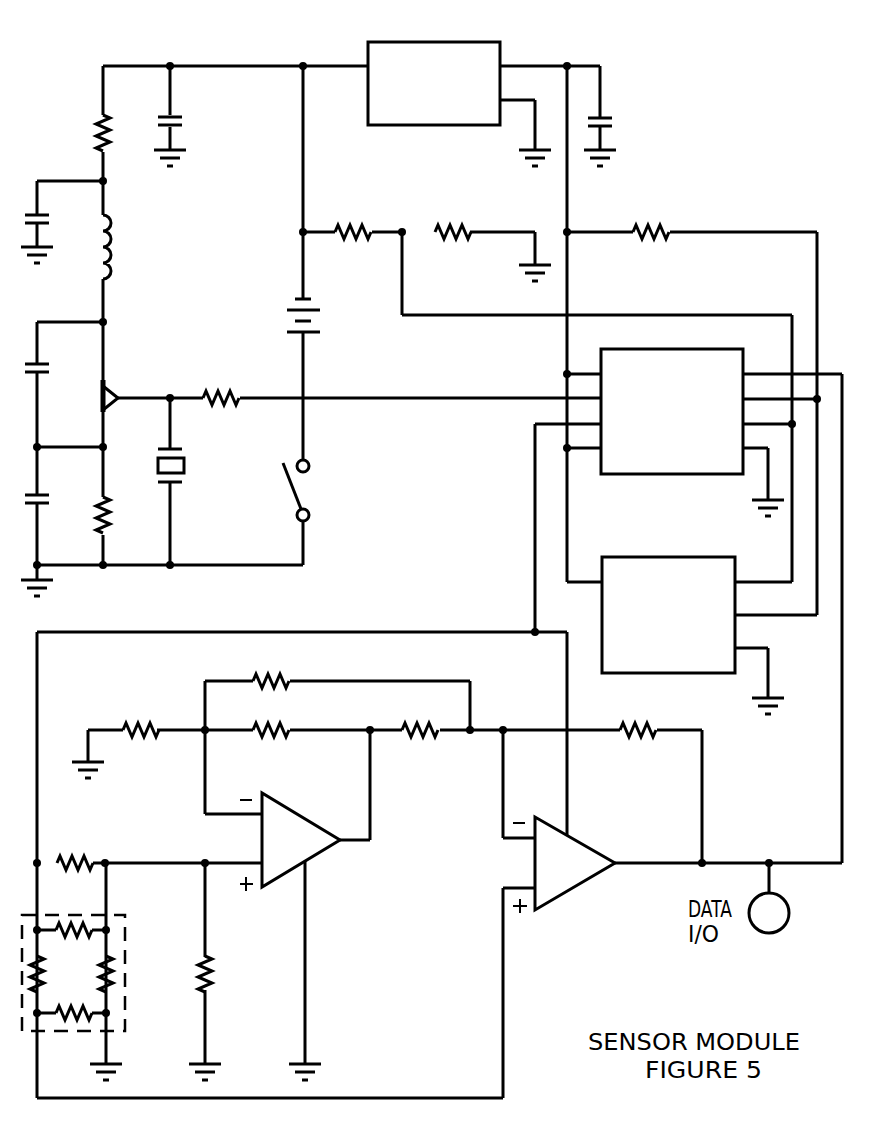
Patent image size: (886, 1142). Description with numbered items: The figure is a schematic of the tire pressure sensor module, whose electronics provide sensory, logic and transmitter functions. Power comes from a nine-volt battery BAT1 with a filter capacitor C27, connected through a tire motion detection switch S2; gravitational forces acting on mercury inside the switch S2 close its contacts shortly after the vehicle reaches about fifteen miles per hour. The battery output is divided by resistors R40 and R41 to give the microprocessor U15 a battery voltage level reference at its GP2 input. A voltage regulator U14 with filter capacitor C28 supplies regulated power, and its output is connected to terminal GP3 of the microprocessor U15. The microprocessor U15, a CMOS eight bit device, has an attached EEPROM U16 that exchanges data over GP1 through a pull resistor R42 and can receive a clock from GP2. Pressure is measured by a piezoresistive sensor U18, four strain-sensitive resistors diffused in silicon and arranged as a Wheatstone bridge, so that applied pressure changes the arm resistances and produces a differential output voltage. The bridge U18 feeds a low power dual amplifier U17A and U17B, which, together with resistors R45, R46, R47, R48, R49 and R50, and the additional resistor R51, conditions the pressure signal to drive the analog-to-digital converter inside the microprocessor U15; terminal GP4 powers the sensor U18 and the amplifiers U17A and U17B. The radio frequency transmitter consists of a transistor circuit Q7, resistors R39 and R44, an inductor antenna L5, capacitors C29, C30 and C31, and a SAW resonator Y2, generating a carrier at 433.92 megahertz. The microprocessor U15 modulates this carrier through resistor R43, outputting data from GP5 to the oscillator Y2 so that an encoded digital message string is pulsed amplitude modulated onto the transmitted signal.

The resistor R39 is at (77, 127).
The filter capacitor C27 is at (190, 117).
The voltage regulator U14 is at (434, 68).
The filter capacitor C28 is at (621, 119).
The capacitor C29 is at (58, 209).
The inductor antenna L5 is at (123, 245).
The voltage divider resistor R40 is at (355, 217).
The voltage divider resistor R41 is at (454, 217).
The pull resistor R42 is at (652, 218).
The nine VDC battery BAT1 is at (278, 282).
The capacitor C30 is at (58, 358).
The transistor circuit Q7 is at (95, 400).
The resistor R43 is at (222, 383).
The microprocessor U15 is at (672, 398).
The capacitor C31 is at (58, 490).
The resistor R44 is at (128, 513).
The SAW resonator Y2 is at (189, 459).
The tire motion detection switch S2 is at (318, 487).
The EEPROM U16 is at (668, 601).
The resistor R45 is at (272, 666).
The resistor R46 is at (141, 715).
The resistor R47 is at (272, 715).
The resistor R48 is at (421, 715).
The resistor R49 is at (638, 716).
The resistor R50 is at (75, 848).
The low power dual amplifier U17A is at (290, 842).
The low power dual amplifier U17B is at (564, 865).
The piezoresistive pressure sensor U18 is at (96, 966).
The resistor R51 is at (228, 972).